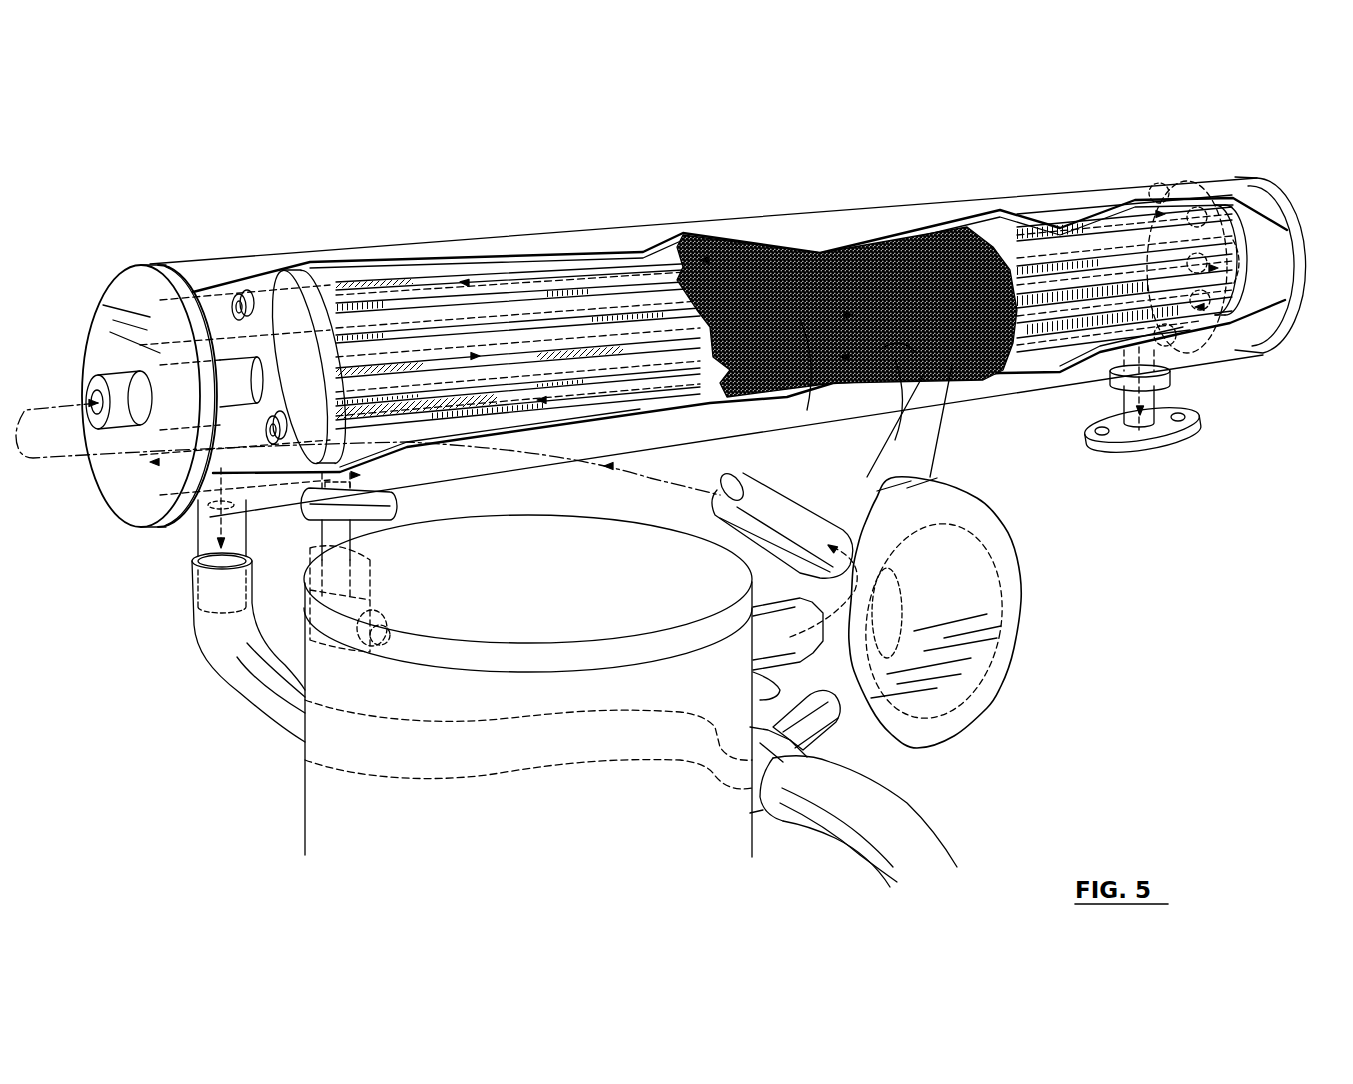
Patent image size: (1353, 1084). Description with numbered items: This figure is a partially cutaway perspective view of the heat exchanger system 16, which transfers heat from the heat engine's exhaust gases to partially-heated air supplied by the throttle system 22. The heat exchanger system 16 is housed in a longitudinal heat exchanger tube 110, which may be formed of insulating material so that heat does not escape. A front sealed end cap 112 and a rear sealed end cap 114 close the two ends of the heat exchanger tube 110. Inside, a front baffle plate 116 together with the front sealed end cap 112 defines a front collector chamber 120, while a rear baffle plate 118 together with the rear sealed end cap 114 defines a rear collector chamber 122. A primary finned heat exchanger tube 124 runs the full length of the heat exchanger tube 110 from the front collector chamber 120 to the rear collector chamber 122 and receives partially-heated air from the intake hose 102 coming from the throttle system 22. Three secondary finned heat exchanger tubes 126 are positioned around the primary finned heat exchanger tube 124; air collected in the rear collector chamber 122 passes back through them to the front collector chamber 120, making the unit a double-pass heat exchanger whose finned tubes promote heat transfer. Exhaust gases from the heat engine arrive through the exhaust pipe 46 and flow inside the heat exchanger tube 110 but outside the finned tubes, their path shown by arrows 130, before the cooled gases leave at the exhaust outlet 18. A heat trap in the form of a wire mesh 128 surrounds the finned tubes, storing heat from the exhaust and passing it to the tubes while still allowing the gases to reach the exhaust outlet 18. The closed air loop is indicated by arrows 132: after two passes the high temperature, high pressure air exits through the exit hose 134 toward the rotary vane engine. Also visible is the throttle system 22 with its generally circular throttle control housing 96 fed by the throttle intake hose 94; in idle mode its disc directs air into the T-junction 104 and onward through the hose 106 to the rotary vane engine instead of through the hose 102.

The heat exchanger system 16 is at (670, 150).
The exhaust outlet 18 is at (1180, 430).
The throttle system 22 is at (1042, 652).
The exhaust pipe 46 is at (347, 653).
The throttle intake hose 94 is at (775, 660).
The throttle control housing 96 is at (1018, 558).
The hose 102 is at (780, 493).
The T-junction 104 is at (763, 822).
The hose 106 is at (893, 812).
The heat exchanger tube 110 is at (477, 243).
The front sealed end cap 112 is at (100, 312).
The rear sealed end cap 114 is at (1307, 262).
The front baffle plate 116 is at (302, 323).
The rear baffle plate 118 is at (1227, 233).
The front collector chamber 120 is at (217, 297).
The rear collector chamber 122 is at (1247, 215).
The primary finned heat exchanger tube 124 is at (577, 340).
The secondary finned heat exchanger tubes 126 is at (1017, 233).
The wire mesh 128 is at (837, 280).
The arrows 130 is at (1173, 380).
The arrows 132 is at (200, 530).
The exit hose 134 is at (250, 680).